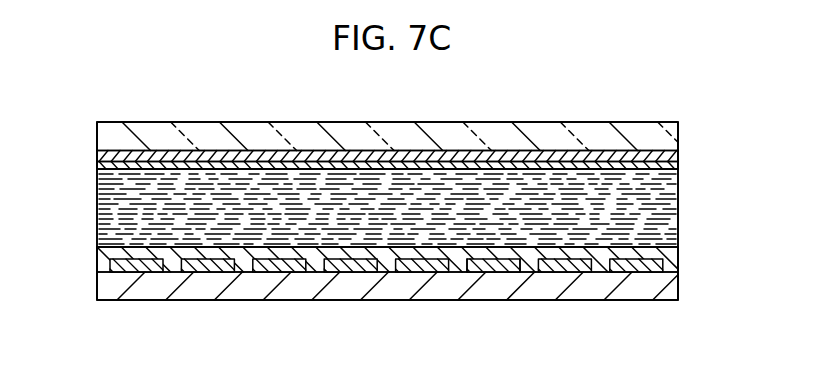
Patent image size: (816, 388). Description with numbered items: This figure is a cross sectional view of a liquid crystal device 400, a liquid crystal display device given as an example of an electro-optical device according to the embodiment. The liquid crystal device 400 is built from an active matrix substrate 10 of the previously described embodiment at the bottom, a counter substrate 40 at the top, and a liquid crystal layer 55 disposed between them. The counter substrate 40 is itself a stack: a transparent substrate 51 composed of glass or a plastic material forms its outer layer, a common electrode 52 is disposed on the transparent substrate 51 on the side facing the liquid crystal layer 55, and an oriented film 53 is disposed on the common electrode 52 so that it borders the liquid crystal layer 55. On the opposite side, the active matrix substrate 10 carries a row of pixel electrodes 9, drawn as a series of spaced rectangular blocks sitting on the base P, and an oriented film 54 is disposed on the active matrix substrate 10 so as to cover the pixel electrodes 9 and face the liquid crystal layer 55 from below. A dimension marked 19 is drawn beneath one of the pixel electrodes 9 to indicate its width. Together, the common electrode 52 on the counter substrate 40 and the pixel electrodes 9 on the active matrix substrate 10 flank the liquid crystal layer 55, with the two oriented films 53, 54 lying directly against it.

The liquid crystal device 400 is at (569, 116).
The counter substrate 40 is at (93, 122).
The active matrix substrate 10 is at (93, 256).
The transparent substrate 51 is at (672, 132).
The common electrode 52 is at (672, 158).
The oriented film 53 is at (674, 167).
The liquid crystal layer 55 is at (672, 205).
The oriented film 54 is at (672, 263).
The pixel electrode 9 is at (465, 262).
The pixel electrode width 19 is at (467, 274).
The array substrate P is at (672, 292).